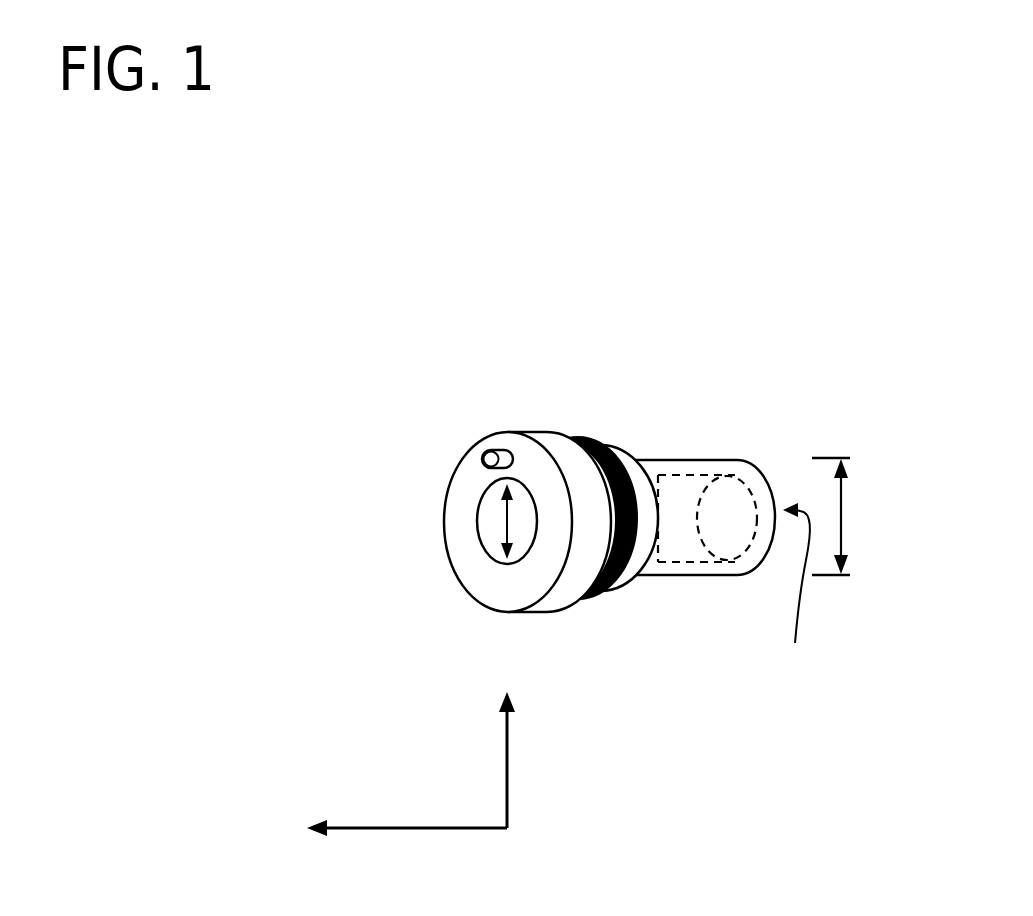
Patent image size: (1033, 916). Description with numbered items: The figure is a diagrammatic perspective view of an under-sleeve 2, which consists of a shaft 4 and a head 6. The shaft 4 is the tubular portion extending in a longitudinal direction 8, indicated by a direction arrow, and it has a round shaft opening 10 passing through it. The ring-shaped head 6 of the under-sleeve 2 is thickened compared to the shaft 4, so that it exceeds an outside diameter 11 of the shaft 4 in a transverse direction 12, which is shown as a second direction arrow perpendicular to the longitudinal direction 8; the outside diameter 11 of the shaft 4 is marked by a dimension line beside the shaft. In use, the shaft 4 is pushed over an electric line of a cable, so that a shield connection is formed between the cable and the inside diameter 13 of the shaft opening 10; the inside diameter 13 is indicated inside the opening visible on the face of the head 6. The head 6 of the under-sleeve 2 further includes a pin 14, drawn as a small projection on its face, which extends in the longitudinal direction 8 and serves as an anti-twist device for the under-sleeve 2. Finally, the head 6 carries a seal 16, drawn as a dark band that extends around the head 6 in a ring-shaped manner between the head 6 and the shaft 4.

The under-sleeve 2 is at (697, 282).
The shaft 4 is at (704, 467).
The head 6 is at (462, 468).
The longitudinal direction 8 is at (402, 830).
The shaft opening 10 is at (801, 594).
The outside diameter 11 is at (841, 520).
The transverse direction 12 is at (507, 752).
The inside diameter 13 is at (503, 516).
The pin 14 is at (500, 452).
The seal 16 is at (593, 440).